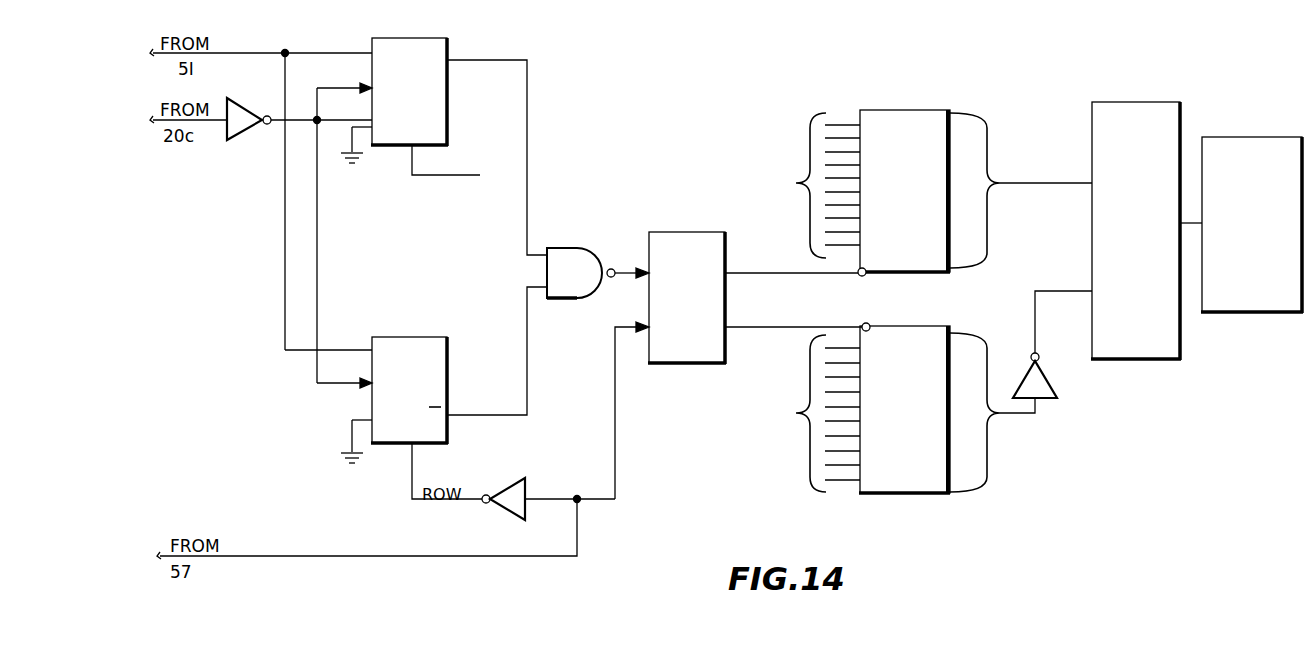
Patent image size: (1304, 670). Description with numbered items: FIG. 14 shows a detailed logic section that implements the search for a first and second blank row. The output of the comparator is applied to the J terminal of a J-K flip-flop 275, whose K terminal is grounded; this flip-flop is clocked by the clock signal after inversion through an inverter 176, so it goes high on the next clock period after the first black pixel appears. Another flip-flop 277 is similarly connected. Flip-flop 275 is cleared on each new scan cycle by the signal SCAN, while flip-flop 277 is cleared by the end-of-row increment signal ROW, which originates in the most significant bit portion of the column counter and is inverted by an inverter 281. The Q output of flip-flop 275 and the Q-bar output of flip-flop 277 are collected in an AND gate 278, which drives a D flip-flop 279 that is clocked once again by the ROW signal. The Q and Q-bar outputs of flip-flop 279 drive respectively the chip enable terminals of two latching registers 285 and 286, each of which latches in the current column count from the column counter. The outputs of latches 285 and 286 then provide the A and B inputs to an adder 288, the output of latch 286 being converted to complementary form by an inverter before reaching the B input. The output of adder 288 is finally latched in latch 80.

The inverter 176 is at (242, 106).
The J-K flip-flop 275 is at (424, 39).
The flip-flop 277 is at (425, 336).
The AND gate 278 is at (577, 247).
The D flip-flop 279 is at (665, 231).
The inverter 281 is at (510, 482).
The latching register 285 is at (920, 110).
The latching register 286 is at (928, 494).
The adder 288 is at (1138, 102).
The latch 80 is at (1247, 136).